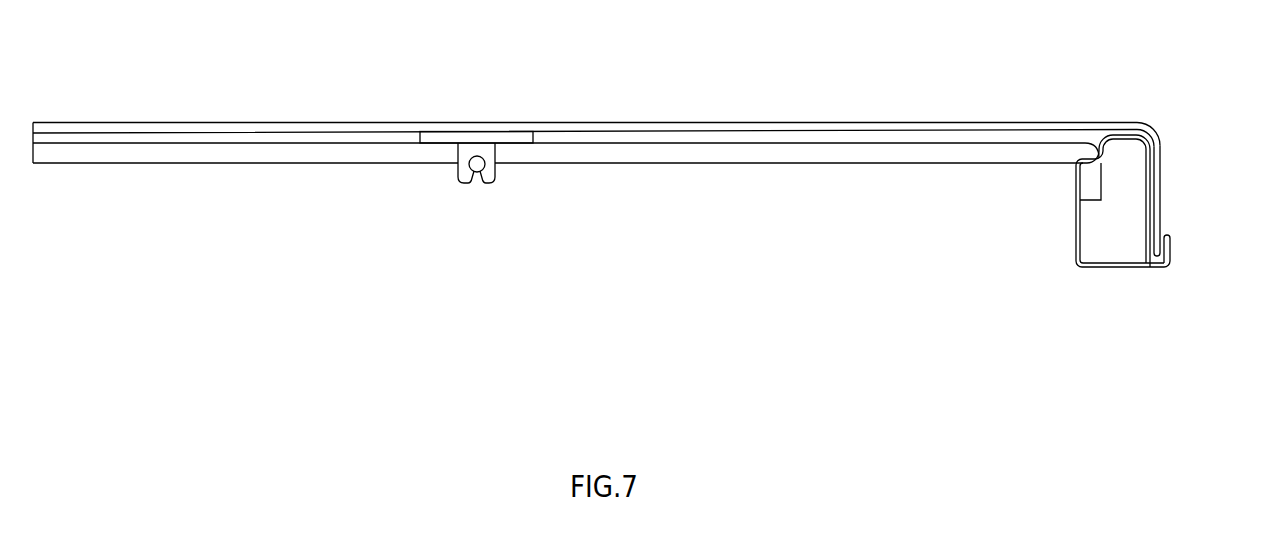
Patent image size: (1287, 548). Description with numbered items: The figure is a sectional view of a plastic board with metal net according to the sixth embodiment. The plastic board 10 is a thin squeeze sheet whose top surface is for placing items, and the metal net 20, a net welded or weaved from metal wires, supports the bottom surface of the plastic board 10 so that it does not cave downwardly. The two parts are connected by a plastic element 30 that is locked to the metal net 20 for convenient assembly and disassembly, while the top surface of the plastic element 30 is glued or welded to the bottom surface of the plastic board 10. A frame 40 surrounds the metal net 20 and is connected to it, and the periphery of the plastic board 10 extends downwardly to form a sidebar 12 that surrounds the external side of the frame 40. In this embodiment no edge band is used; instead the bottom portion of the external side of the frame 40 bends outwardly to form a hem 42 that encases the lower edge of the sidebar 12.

The plastic board 10 is at (745, 127).
The sidebar 12 is at (1160, 200).
The metal net 20 is at (800, 153).
The plastic element 30 is at (484, 137).
The frame 40 is at (1097, 242).
The hem 42 is at (1167, 248).